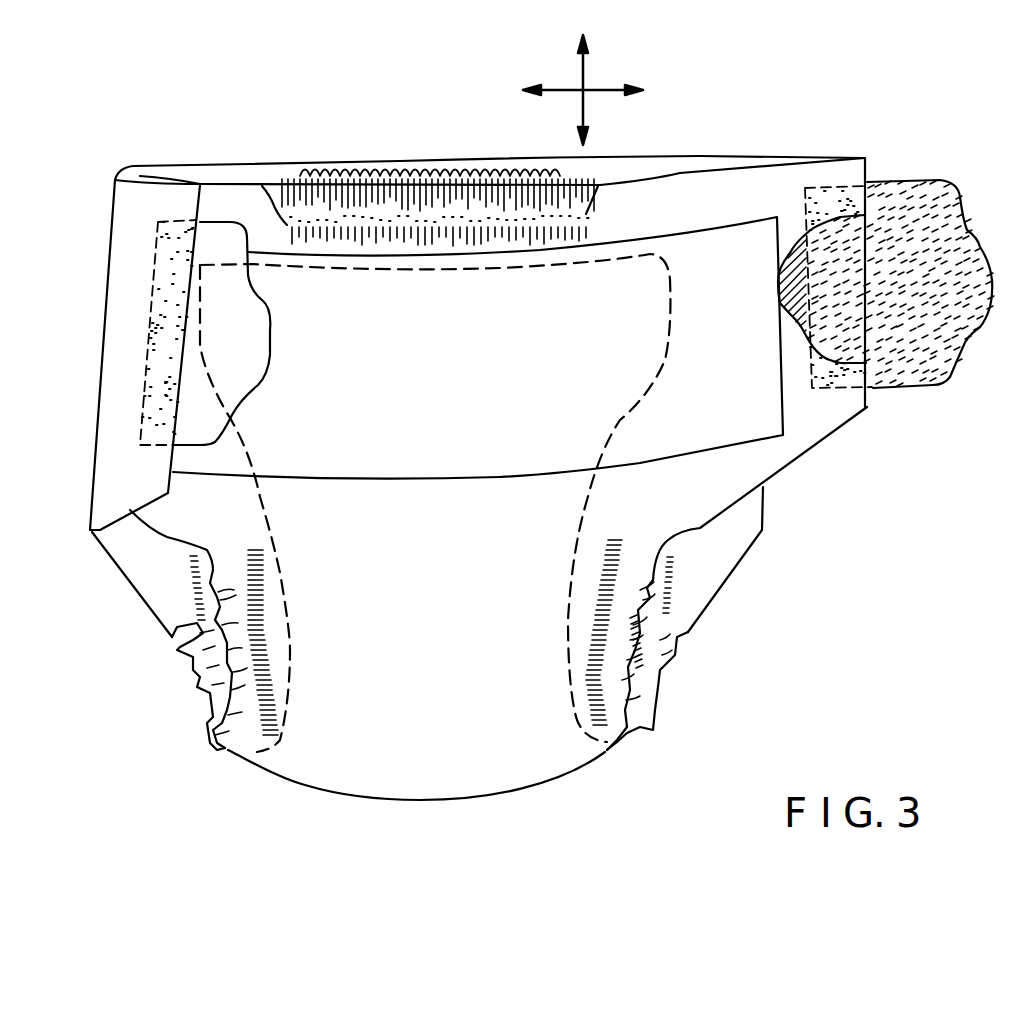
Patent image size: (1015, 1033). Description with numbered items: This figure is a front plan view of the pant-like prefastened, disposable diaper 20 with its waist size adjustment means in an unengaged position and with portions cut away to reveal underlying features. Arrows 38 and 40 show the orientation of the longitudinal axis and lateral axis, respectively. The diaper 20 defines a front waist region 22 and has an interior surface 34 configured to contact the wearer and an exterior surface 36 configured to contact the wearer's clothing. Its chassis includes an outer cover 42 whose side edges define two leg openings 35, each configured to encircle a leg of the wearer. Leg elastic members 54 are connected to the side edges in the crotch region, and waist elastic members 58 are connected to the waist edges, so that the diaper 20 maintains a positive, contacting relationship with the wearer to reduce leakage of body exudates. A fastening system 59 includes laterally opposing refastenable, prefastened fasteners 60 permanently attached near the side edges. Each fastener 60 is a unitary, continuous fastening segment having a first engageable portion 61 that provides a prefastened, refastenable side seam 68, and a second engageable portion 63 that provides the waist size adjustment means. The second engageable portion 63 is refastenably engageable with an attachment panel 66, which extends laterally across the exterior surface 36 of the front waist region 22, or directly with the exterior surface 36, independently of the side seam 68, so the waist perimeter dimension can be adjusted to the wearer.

The pant-like prefastened, disposable diaper 20 is at (92, 136).
The front waist region 22 is at (703, 190).
The interior surface 34 is at (298, 163).
The exterior surface 36 is at (261, 217).
The arrow depicting the longitudinal axis 38 is at (581, 78).
The arrow depicting the lateral axis 40 is at (597, 91).
The outer cover 42 is at (423, 524).
The leg openings 35 is at (180, 627).
The leg elastic members 54 is at (240, 748).
The waist elastic members 58 is at (396, 195).
The fastening system 59 is at (888, 267).
The fastener 60 is at (252, 343).
The first engageable portion 61 is at (841, 348).
The second engageable portion 63 is at (953, 337).
The attachment panel 66 is at (708, 458).
The refastenable side seam 68 is at (177, 184).